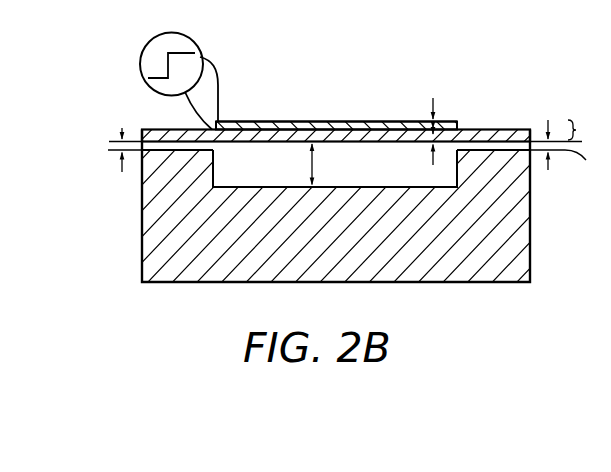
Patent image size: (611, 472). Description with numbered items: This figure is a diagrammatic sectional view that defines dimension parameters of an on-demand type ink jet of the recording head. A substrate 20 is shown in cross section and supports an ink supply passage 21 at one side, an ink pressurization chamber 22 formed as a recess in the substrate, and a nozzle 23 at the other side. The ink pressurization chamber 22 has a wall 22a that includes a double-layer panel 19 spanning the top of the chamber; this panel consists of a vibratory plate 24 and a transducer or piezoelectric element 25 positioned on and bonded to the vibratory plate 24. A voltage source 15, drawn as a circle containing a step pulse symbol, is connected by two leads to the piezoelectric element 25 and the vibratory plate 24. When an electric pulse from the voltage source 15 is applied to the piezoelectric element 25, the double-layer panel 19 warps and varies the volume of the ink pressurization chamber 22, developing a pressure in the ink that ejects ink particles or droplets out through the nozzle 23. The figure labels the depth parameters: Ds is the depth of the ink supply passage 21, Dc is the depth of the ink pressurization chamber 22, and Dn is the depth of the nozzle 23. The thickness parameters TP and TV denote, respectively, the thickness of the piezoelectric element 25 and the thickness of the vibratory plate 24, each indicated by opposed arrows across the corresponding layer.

The voltage source 15 is at (202, 38).
The double-layer panel 19 is at (589, 132).
The substrate 20 is at (522, 258).
The ink supply passage 21 is at (170, 148).
The ink pressurization chamber 22 is at (357, 181).
The wall 22a is at (459, 100).
The nozzle 23 is at (511, 140).
The vibratory plate 24 is at (272, 133).
The piezoelectric element 25 is at (344, 121).
The depth of ink supply passage Ds is at (109, 142).
The depth of nozzle Dn is at (568, 152).
The depth of ink pressurization chamber Dc is at (312, 160).
The thickness of piezoelectric element TP is at (431, 126).
The thickness of vibratory plate TV is at (430, 136).